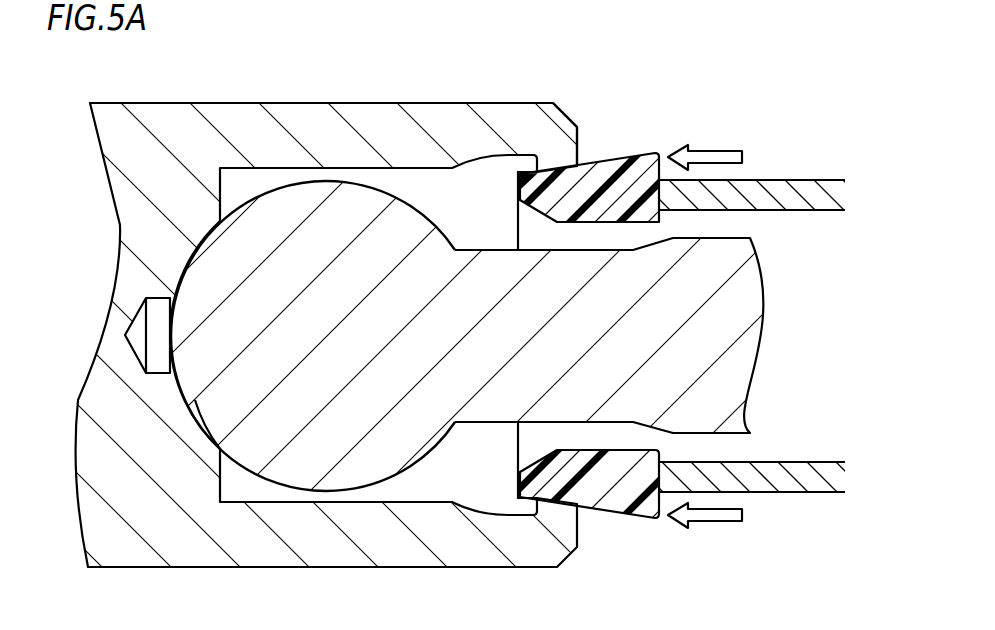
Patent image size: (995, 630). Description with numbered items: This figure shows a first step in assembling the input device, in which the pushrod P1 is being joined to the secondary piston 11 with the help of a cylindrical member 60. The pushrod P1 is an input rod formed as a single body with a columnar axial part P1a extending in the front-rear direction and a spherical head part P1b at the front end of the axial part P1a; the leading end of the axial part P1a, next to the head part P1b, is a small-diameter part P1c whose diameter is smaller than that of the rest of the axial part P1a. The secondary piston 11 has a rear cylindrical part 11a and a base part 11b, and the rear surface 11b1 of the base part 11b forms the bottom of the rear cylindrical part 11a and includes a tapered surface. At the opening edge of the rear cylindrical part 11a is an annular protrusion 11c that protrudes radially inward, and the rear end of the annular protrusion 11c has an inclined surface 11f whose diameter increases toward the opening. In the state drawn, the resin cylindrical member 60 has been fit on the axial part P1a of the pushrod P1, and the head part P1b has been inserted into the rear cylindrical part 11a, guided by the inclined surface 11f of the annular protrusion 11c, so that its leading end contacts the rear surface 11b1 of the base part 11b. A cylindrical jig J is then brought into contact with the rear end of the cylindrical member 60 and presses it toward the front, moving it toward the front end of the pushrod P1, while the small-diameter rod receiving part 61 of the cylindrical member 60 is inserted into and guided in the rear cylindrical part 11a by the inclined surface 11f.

The secondary piston 11 is at (497, 340).
The rear cylindrical part 11a is at (368, 128).
The base part 11b is at (127, 137).
The rear surface 11b1 is at (205, 410).
The annular protrusion 11c is at (568, 157).
The inclined surface 11f is at (585, 185).
The cylindrical member 60 is at (613, 522).
The rod receiving part 61 is at (534, 182).
The cylindrical jig J is at (780, 188).
The pushrod P1 is at (497, 339).
The axial part P1a is at (730, 436).
The spherical head part P1b is at (287, 203).
The small-diameter part P1c is at (498, 424).